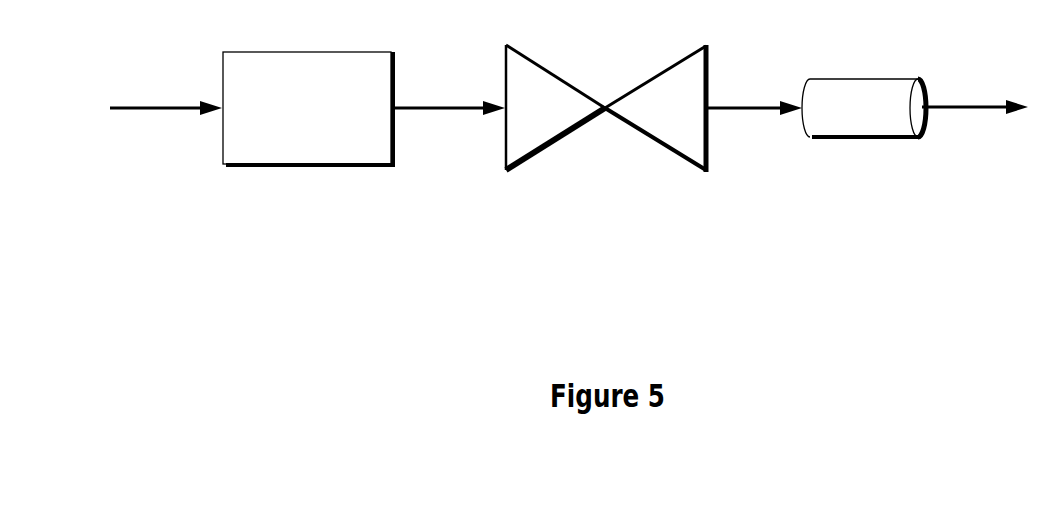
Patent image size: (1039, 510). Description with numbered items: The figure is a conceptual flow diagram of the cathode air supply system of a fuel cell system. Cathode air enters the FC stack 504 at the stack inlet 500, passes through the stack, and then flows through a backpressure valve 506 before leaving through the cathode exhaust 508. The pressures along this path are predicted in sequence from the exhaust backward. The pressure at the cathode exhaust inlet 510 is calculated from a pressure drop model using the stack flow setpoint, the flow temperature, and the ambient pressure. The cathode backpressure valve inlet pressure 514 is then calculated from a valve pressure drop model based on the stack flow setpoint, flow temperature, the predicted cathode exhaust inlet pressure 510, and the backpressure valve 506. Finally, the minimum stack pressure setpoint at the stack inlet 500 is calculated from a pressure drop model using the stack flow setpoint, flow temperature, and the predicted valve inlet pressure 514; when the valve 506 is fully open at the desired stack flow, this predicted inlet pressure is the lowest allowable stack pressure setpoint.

The stack inlet 500 is at (223, 101).
The FC stack 504 is at (325, 122).
The backpressure valve 506 is at (537, 160).
The cathode exhaust 508 is at (878, 118).
The cathode exhaust inlet 510 is at (802, 101).
The cathode backpressure valve inlet pressure 514 is at (449, 91).